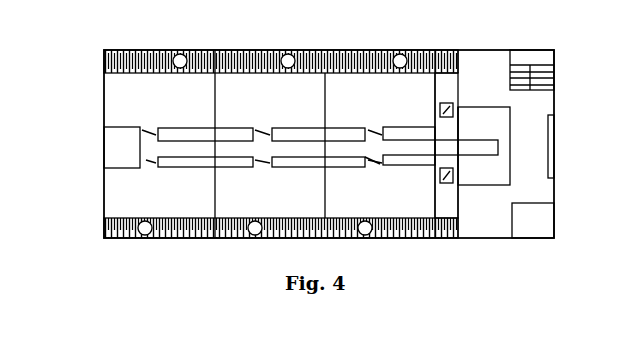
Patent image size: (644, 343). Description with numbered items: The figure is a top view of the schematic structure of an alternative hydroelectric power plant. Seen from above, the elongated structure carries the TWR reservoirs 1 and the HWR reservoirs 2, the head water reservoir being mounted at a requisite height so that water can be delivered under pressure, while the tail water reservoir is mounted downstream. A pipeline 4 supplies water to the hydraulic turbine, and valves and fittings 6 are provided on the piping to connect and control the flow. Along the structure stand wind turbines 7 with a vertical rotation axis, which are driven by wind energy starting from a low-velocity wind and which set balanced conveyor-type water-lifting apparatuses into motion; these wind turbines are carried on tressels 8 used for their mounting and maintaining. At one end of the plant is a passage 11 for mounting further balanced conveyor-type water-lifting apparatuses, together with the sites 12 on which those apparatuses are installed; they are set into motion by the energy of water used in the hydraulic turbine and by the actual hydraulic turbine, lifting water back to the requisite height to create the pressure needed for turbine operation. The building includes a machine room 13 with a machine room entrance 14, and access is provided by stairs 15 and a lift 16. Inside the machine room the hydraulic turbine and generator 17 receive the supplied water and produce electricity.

The TWR reservoirs 1 is at (398, 58).
The HWR reservoirs 2 is at (345, 122).
The pipeline supplying water to the hydraulic turbine 4 is at (487, 147).
The valves and fittings 6 is at (376, 162).
The wind turbine with vertical rotation axis 7 is at (362, 240).
The tressels for the wind turbine mounting and maintaining 8 is at (104, 62).
The passage for mounting BCWLA 11 is at (443, 88).
The sites for mounting BCWLA 12 is at (450, 172).
The machine room 13 is at (532, 188).
The machine room entrance 14 is at (555, 157).
The stairs 15 is at (547, 58).
The lift 16 is at (542, 218).
The hydraulic turbine and generator 17 is at (500, 122).